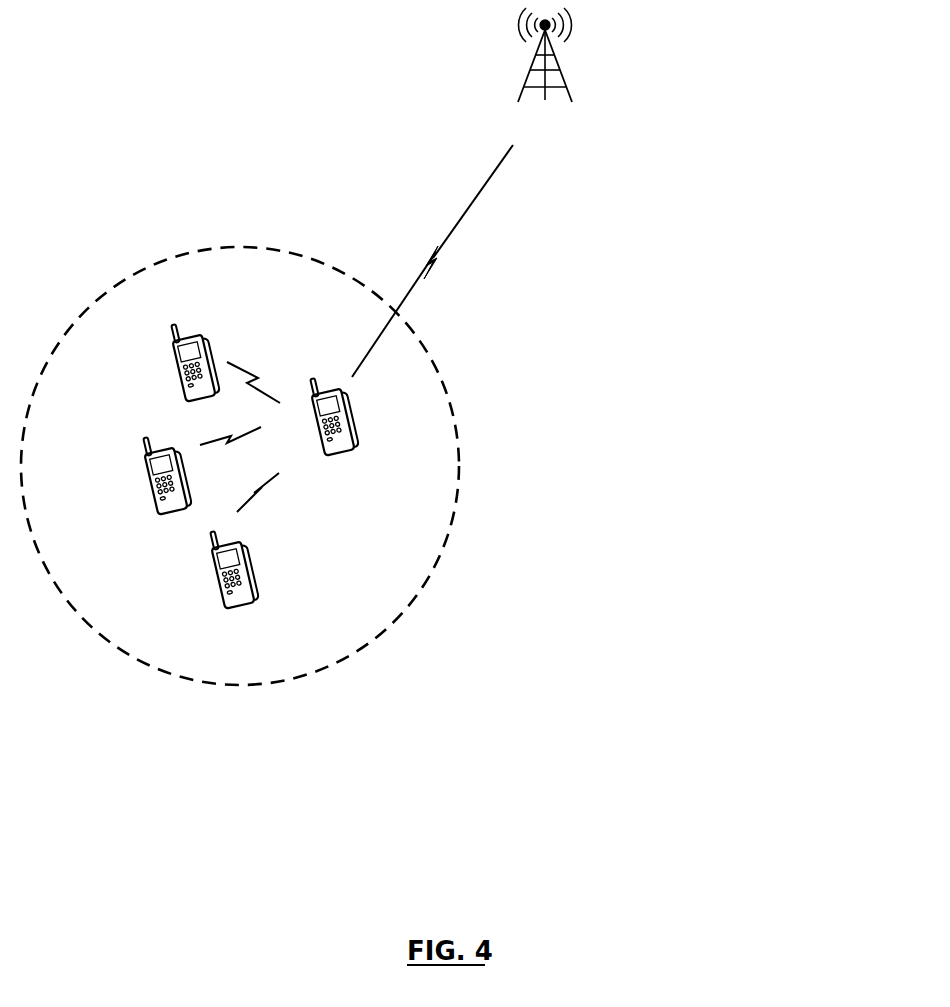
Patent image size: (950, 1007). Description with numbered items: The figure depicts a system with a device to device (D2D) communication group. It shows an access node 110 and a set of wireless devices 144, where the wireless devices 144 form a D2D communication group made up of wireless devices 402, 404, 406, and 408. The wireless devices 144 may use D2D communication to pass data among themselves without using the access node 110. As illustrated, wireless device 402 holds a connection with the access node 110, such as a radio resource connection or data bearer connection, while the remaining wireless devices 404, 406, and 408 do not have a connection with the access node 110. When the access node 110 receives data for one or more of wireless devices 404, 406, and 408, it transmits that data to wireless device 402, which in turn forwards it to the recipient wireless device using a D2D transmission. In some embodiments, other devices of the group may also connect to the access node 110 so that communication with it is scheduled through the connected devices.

The access node 110 is at (546, 97).
The wireless devices 144 is at (443, 540).
The wireless device 402 is at (347, 450).
The wireless device 404 is at (183, 390).
The wireless device 406 is at (155, 506).
The wireless device 408 is at (221, 600).